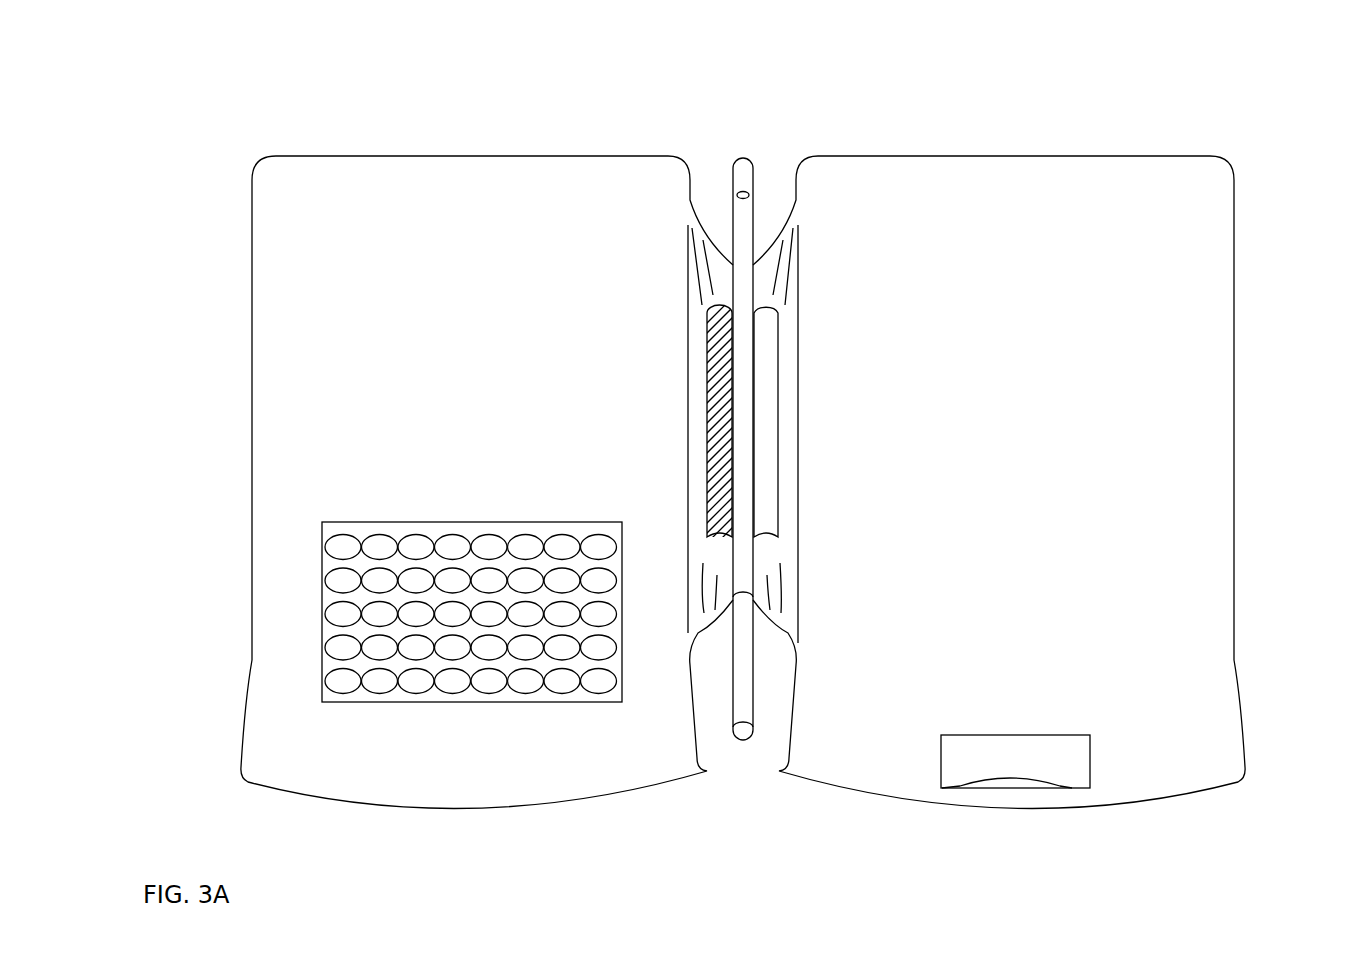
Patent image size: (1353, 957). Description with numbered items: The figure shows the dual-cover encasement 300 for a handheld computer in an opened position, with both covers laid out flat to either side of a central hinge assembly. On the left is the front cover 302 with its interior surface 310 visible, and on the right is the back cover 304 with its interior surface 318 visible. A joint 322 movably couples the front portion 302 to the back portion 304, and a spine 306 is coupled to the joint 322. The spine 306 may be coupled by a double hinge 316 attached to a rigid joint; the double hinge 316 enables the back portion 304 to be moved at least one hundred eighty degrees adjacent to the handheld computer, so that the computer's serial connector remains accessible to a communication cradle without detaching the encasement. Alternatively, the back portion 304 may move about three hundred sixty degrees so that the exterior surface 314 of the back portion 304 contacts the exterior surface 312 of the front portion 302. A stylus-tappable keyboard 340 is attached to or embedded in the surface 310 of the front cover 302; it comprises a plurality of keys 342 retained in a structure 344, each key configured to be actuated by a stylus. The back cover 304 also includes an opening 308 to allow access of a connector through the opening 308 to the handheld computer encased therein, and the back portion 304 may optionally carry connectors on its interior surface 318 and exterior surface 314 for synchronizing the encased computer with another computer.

The dual-cover encasement 300 is at (432, 132).
The front cover 302 is at (252, 338).
The back cover 304 is at (1233, 347).
The spine 306 is at (748, 215).
The opening 308 is at (1058, 765).
The interior surface of front cover 310 is at (507, 217).
The exterior surface of front portion 312 is at (384, 783).
The exterior surface of back portion 314 is at (1197, 750).
The double hinge 316 is at (723, 500).
The interior surface of back cover 318 is at (1145, 512).
The joint 322 is at (710, 263).
The stylus-tappable keyboard 340 is at (322, 670).
The keys 342 is at (343, 613).
The structure 344 is at (330, 565).